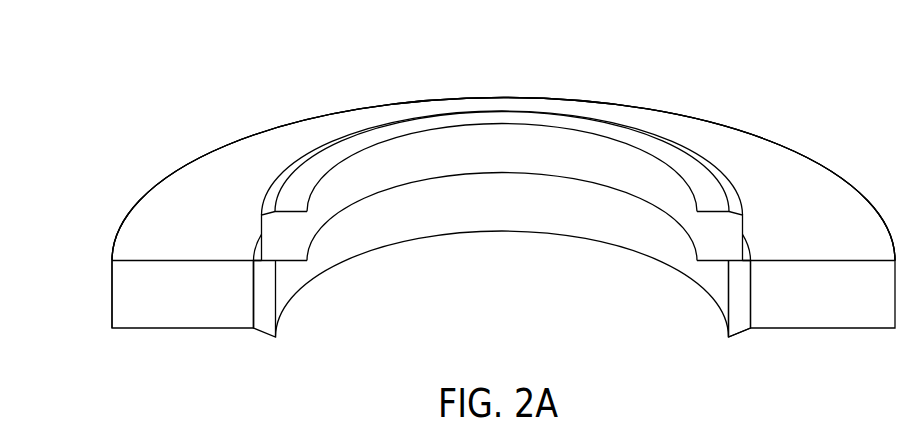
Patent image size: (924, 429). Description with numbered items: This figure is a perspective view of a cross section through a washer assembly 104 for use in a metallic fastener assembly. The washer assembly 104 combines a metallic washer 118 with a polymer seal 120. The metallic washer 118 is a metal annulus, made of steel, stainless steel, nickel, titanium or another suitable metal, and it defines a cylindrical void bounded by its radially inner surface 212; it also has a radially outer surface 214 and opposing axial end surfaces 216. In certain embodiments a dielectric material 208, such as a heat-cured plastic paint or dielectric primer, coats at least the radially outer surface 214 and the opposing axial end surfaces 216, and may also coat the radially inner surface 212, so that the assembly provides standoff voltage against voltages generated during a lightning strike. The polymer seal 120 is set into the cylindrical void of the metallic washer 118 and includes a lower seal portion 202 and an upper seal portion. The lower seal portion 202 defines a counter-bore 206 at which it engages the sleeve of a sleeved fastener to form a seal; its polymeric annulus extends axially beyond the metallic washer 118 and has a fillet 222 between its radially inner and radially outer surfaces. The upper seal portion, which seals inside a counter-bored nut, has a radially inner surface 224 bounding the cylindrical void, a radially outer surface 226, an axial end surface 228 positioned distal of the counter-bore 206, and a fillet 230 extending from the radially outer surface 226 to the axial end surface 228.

The washer assembly 104 is at (162, 114).
The metallic washer 118 is at (195, 305).
The polymer seal 120 is at (534, 99).
The lower seal portion 202 is at (678, 258).
The counter-bore 206 is at (710, 310).
The dielectric material 208 is at (275, 137).
The radially inner surface 212 is at (254, 294).
The radially outer surface 214 is at (110, 292).
The opposing axial end surfaces 216 is at (143, 222).
The fillet 222 is at (745, 343).
The radially inner surface 224 is at (687, 222).
The radially outer surface 226 is at (746, 252).
The axial end surface 228 is at (713, 202).
The fillet 230 is at (738, 173).